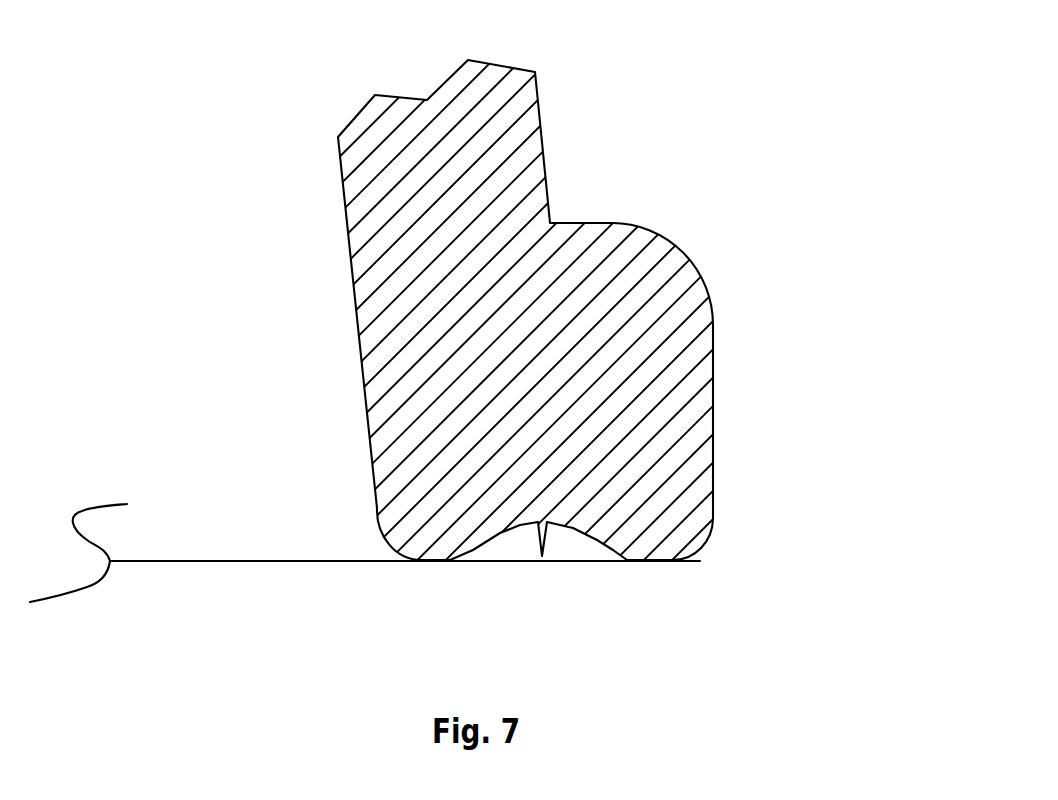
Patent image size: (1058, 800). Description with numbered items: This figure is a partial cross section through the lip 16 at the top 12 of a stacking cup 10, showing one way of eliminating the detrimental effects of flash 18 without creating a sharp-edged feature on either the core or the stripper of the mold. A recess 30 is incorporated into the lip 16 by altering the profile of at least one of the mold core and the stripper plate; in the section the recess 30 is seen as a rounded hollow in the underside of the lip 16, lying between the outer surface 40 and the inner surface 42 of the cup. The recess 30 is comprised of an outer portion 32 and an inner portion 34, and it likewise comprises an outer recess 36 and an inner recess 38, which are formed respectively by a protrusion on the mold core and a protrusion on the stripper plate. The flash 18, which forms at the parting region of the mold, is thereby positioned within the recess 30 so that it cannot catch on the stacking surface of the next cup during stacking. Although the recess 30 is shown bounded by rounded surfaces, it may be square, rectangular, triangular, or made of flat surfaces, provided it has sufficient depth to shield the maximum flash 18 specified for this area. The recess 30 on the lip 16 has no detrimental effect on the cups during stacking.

The stacking cup 10 is at (537, 71).
The top 12 is at (325, 564).
The lip 16 is at (675, 236).
The flash 18 is at (551, 560).
The recess 30 is at (543, 563).
The outer portion 32 is at (716, 505).
The inner portion 34 is at (396, 511).
The outer recess 36 is at (592, 560).
The inner recess 38 is at (511, 549).
The outer surface 40 is at (679, 558).
The inner surface 42 is at (426, 564).